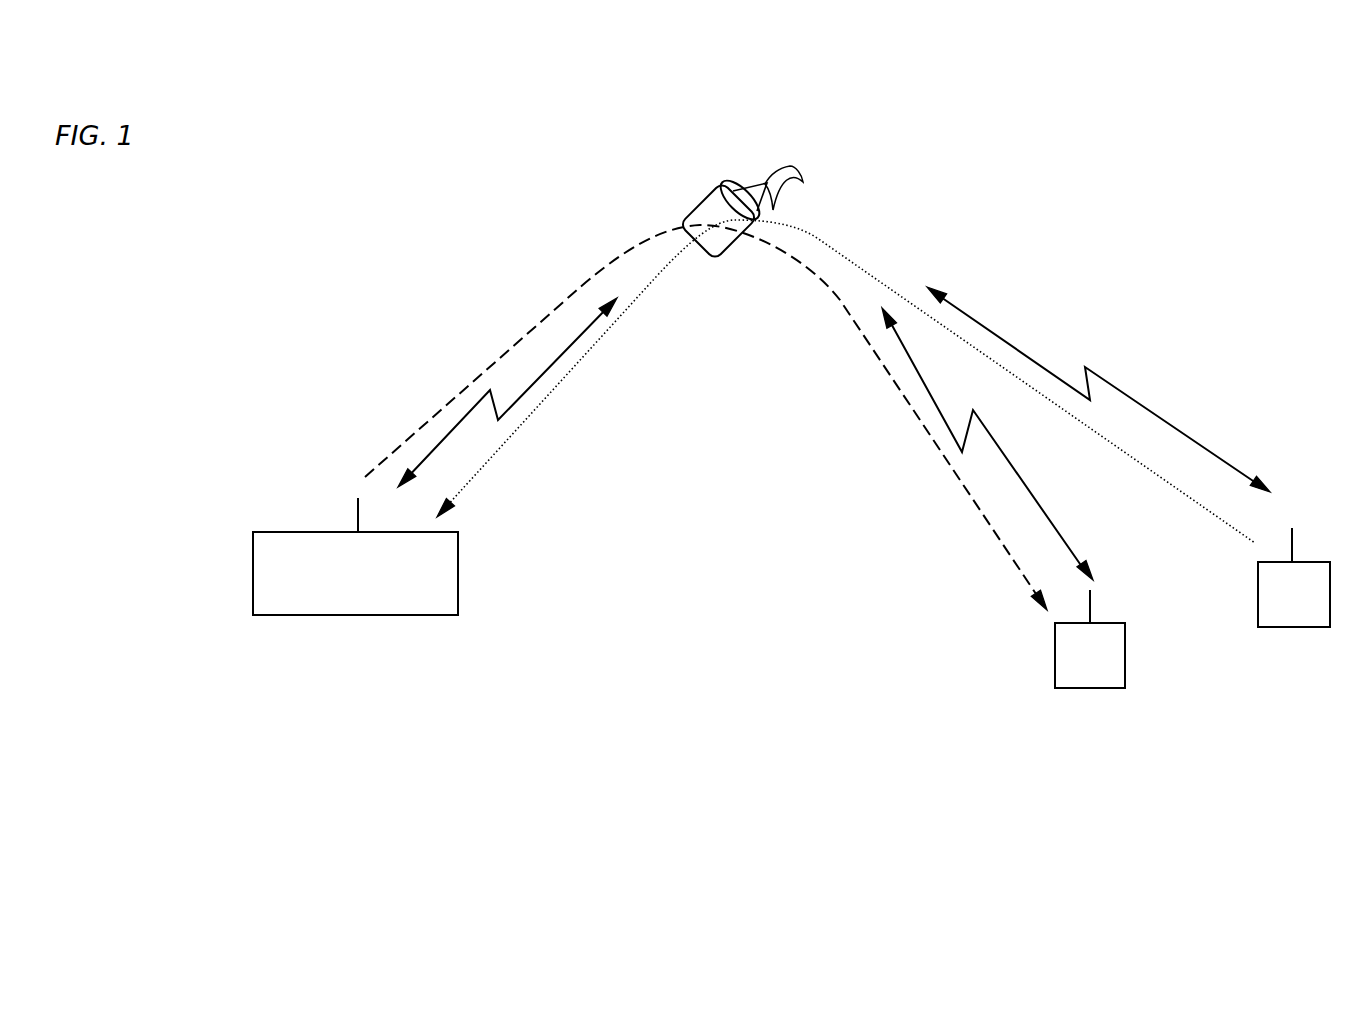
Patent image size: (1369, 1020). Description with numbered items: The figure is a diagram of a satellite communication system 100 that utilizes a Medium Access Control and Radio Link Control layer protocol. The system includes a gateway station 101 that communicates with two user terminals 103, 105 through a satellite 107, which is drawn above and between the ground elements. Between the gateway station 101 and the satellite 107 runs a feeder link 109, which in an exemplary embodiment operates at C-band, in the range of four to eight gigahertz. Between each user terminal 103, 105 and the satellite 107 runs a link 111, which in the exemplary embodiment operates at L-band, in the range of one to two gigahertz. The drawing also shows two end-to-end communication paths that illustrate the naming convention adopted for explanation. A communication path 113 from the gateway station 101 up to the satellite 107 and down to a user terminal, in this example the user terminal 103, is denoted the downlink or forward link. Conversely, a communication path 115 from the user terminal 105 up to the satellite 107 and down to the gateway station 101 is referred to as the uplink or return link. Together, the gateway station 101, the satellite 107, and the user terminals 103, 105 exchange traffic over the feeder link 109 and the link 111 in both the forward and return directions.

The satellite communication system 100 is at (910, 177).
The gateway station 101 is at (357, 617).
The user terminal 103 is at (1090, 688).
The user terminal 105 is at (1292, 627).
The satellite 107 is at (701, 204).
The feeder link 109 is at (558, 357).
The link 111 is at (928, 390).
The communication path 113 is at (413, 428).
The communication path 115 is at (555, 408).